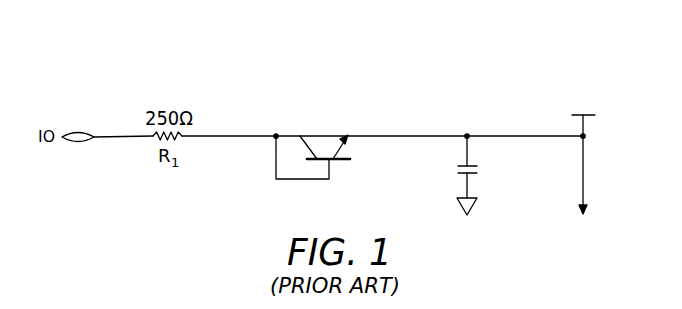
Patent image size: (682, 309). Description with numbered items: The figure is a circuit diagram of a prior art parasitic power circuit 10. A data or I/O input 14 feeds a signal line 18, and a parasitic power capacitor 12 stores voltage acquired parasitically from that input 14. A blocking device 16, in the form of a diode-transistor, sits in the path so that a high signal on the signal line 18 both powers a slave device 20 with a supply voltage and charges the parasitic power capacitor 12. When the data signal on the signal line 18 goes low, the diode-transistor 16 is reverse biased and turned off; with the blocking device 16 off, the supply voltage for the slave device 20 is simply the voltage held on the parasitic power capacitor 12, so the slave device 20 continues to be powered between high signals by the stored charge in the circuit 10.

The parasitic power circuit 10 is at (425, 83).
The parasitic power capacitor 12 is at (457, 168).
The data or I/O input 14 is at (79, 131).
The blocking device 16 is at (334, 162).
The signal line 18 is at (243, 135).
The slave device 20 is at (585, 173).